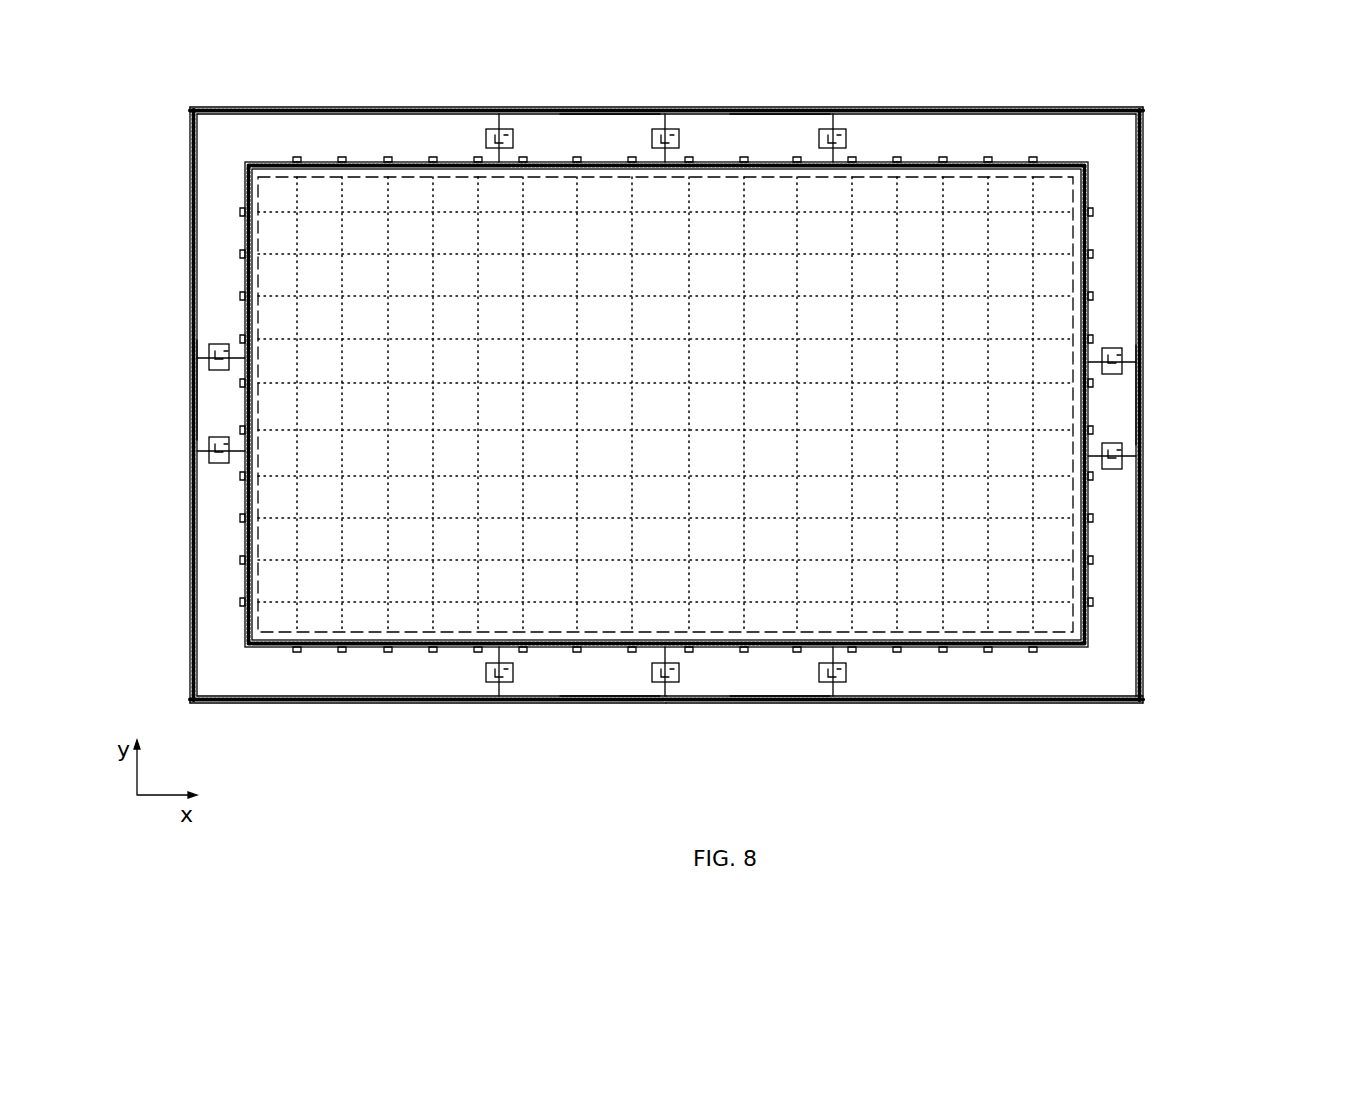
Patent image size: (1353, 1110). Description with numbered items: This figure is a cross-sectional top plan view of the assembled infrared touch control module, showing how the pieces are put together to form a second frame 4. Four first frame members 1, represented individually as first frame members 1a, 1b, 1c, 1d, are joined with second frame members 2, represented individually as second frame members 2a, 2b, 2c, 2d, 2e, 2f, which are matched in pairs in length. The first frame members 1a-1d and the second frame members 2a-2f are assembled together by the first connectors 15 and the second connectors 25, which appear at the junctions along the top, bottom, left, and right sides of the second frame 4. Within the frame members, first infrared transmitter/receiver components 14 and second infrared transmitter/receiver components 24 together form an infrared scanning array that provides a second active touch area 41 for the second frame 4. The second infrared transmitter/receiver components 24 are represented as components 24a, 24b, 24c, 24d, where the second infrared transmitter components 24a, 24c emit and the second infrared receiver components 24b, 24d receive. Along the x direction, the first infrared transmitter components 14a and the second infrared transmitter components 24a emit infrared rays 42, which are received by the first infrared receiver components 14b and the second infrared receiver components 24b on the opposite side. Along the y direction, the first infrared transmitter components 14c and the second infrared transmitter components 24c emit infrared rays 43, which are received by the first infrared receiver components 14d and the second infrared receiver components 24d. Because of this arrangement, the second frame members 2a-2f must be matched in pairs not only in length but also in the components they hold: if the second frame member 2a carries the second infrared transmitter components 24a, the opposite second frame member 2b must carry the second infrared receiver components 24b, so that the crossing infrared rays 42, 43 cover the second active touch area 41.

The first frame member 1 is at (1335, 614).
The first frame member 1a is at (283, 107).
The first frame member 1b is at (1050, 107).
The first frame member 1c is at (283, 703).
The first frame member 1d is at (1050, 703).
The second frame member 2 is at (1160, 687).
The second frame member 2a is at (614, 107).
The second frame member 2b is at (614, 703).
The second frame member 2c is at (779, 107).
The second frame member 2d is at (779, 703).
The second frame member 2e is at (190, 390).
The second frame member 2f is at (1143, 395).
The second frame 4 is at (1237, 137).
The first infrared transmitter/receiver component 14 is at (1352, 772).
The first infrared transmitter component 14a is at (342, 157).
The first infrared receiver component 14b is at (342, 653).
The first infrared transmitter component 14c is at (240, 254).
The first infrared receiver component 14d is at (1093, 258).
The first connector 15 is at (488, 129).
The second infrared transmitter/receiver component 24 is at (1352, 844).
The second infrared transmitter component 24a is at (577, 157).
The second infrared receiver component 24b is at (577, 653).
The second infrared transmitter component 24c is at (240, 383).
The second infrared receiver component 24d is at (1093, 386).
The second connector 25 is at (508, 136).
The second active touch area 41 is at (1058, 181).
The infrared rays 42 is at (1073, 218).
The infrared rays 43 is at (1067, 247).